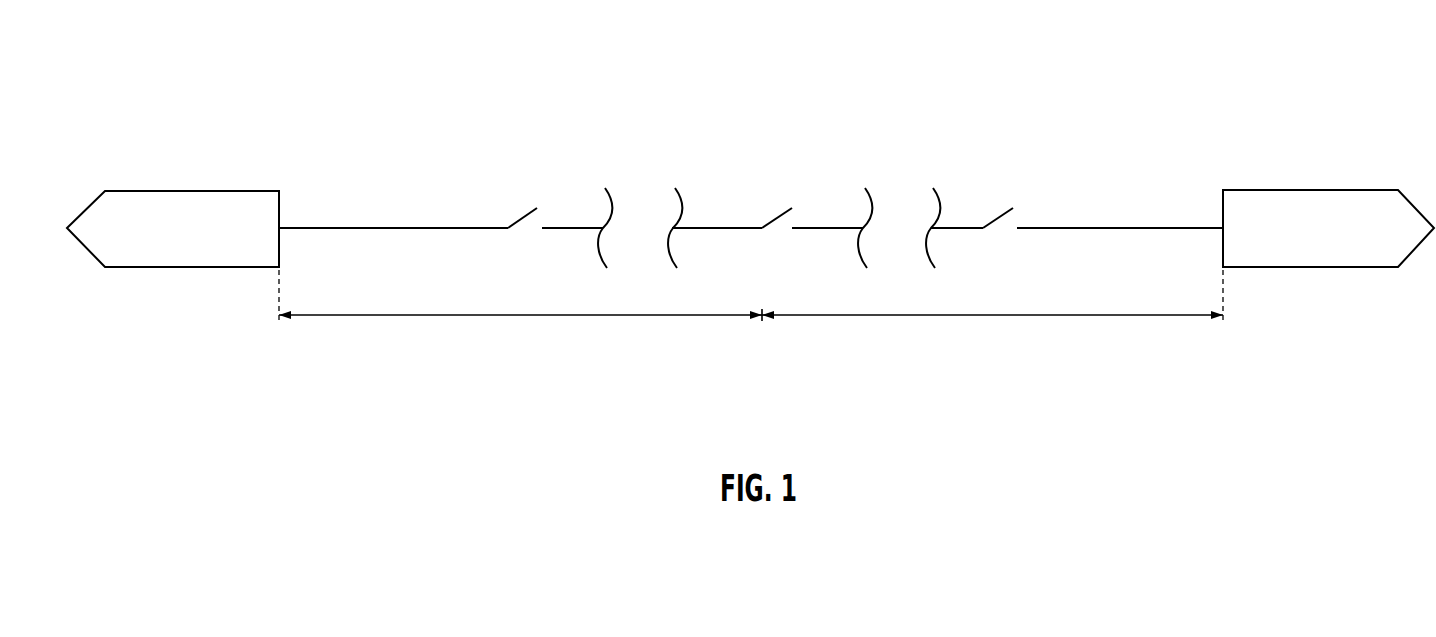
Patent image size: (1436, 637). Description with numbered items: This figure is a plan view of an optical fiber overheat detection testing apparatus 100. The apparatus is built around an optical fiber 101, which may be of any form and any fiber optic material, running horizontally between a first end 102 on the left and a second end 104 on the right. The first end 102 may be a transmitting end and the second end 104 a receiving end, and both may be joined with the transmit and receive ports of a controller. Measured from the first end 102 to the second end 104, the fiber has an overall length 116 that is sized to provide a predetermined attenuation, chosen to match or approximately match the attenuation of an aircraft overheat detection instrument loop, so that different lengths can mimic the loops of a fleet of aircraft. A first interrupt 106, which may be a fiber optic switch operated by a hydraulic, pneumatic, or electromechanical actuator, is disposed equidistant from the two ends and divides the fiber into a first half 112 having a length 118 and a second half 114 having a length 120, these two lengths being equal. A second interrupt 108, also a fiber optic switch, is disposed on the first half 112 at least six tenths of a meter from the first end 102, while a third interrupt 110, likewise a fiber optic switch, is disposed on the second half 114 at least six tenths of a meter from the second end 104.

The optical fiber overheat detection testing apparatus 100 is at (145, 70).
The optical fiber 101 is at (716, 216).
The first end 102 is at (192, 189).
The second end 104 is at (1312, 189).
The first interrupt 106 is at (777, 215).
The second interrupt 108 is at (511, 226).
The third interrupt 110 is at (998, 214).
The first half 112 is at (355, 227).
The second half 114 is at (1083, 227).
The length 116 is at (763, 330).
The length of first half 118 is at (433, 317).
The length of second half 120 is at (998, 317).